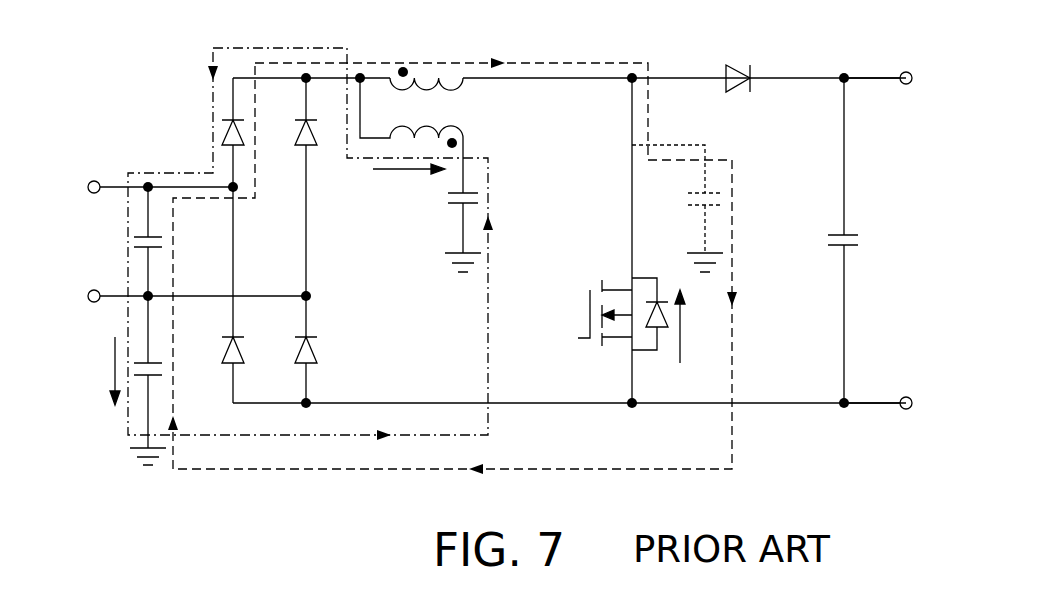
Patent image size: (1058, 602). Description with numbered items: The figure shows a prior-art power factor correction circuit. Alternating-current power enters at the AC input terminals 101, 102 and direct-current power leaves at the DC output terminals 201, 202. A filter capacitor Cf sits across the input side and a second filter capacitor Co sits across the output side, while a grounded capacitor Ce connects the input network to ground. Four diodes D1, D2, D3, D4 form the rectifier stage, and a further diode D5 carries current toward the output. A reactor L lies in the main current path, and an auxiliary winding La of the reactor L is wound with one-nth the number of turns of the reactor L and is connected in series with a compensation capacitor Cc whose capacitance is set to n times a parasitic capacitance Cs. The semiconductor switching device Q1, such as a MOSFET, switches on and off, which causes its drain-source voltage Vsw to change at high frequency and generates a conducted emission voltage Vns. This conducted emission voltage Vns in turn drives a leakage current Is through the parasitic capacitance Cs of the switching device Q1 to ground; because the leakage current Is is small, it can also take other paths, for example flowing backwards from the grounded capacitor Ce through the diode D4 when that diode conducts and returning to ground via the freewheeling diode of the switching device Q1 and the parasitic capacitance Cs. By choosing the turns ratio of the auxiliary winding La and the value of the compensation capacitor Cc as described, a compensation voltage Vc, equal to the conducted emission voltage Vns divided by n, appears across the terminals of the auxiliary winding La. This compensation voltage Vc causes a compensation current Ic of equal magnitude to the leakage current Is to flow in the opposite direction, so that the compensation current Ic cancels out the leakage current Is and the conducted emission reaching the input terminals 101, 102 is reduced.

The AC input terminal 101 is at (138, 187).
The AC input terminal 102 is at (174, 296).
The DC output terminal 201 is at (905, 78).
The DC output terminal 202 is at (905, 403).
The diode D1 is at (210, 207).
The diode D2 is at (219, 358).
The diode D3 is at (293, 207).
The diode D4 is at (291, 370).
The diode D5 is at (736, 65).
The reactor L is at (426, 63).
The auxiliary winding La is at (427, 135).
The compensation capacitor Cc is at (453, 232).
The filter capacitor Cf is at (128, 241).
The grounded capacitor Ce is at (156, 380).
The parasitic capacitance Cs is at (677, 208).
The filter capacitor Co is at (859, 240).
The semiconductor switching device Q1 is at (608, 240).
The compensation voltage Vc is at (409, 183).
The conducted emission voltage Vns is at (96, 371).
The drain-source voltage Vsw is at (675, 341).
The compensation current Ic is at (310, 244).
The leakage current Is is at (452, 284).